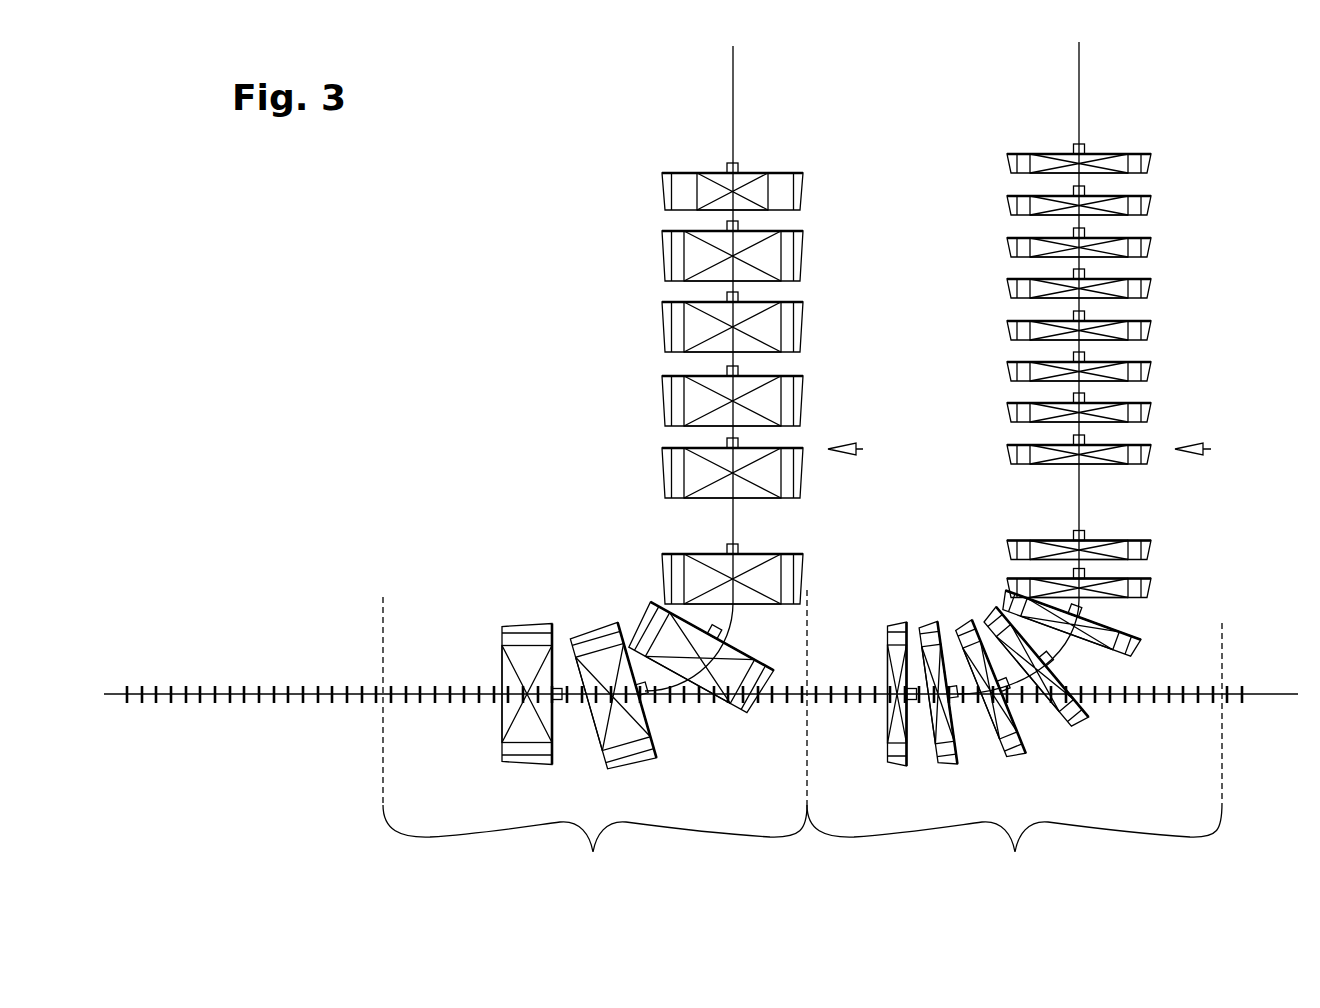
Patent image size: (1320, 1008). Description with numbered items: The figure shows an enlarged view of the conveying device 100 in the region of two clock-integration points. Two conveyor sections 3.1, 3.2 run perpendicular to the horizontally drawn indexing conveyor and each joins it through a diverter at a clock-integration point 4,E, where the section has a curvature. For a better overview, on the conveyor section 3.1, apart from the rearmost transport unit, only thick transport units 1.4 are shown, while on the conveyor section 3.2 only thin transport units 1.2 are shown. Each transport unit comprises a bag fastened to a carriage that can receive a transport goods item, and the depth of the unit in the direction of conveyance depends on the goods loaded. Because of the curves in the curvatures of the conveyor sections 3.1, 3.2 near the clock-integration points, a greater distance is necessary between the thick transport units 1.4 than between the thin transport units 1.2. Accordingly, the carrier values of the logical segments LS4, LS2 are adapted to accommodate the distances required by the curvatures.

The conveying device 100 is at (385, 367).
The conveyor section 3.1 is at (675, 76).
The conveyor section 3.2 is at (1037, 65).
The thick transport unit 1.4 is at (622, 296).
The thin transport unit 1.2 is at (1190, 294).
The diverter at clock-integration point 4,E is at (659, 706).
The logical segment LS4 is at (595, 737).
The logical segment LS2 is at (1014, 754).